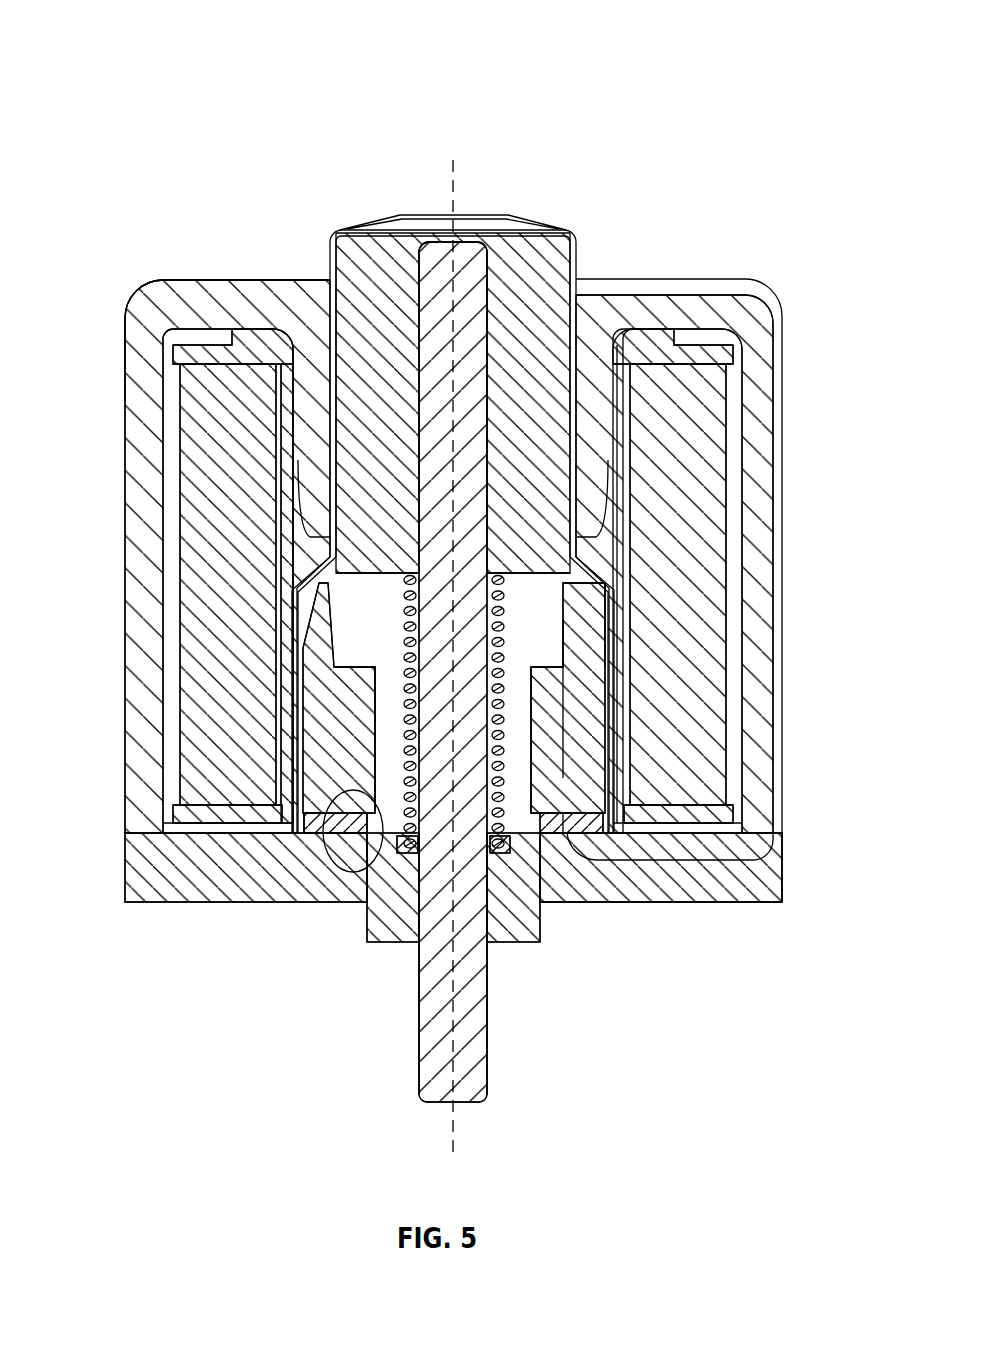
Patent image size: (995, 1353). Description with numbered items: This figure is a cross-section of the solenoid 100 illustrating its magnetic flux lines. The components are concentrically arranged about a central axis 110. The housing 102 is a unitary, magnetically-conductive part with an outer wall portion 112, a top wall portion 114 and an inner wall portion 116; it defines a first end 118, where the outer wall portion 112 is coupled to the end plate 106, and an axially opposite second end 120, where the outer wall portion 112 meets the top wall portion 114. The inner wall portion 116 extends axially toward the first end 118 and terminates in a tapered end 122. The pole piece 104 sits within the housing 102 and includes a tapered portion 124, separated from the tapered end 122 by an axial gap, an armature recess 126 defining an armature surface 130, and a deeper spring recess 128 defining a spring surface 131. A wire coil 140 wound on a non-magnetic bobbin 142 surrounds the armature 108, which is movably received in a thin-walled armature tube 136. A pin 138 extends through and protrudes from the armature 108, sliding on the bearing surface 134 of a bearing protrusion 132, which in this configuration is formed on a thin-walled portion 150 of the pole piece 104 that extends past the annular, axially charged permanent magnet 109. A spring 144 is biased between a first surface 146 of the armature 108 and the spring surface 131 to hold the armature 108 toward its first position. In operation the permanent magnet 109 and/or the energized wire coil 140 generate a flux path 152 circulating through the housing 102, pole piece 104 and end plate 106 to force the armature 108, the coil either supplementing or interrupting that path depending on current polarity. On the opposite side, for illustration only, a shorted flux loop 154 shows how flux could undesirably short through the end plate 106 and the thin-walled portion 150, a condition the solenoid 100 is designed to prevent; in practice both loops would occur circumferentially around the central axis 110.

The solenoid 100 is at (147, 52).
The housing 102 is at (787, 492).
The pole piece 104 is at (590, 727).
The end plate 106 is at (723, 903).
The armature 108 is at (553, 250).
The permanent magnet 109 is at (367, 820).
The central axis 110 is at (453, 165).
The outer wall portion 112 is at (135, 560).
The top wall portion 114 is at (208, 305).
The inner wall portion 116 is at (300, 378).
The first end 118 is at (108, 862).
The second end 120 is at (137, 268).
The tapered end 122 is at (620, 525).
The tapered portion 124 is at (587, 625).
The armature recess 126 is at (557, 653).
The spring recess 128 is at (392, 683).
The armature surface 130 is at (363, 665).
The spring surface 131 is at (507, 835).
The bearing protrusion 132 is at (382, 927).
The bearing surface 134 is at (418, 910).
The armature tube 136 is at (481, 215).
The pin 138 is at (488, 1040).
The wire coil 140 is at (190, 475).
The bobbin 142 is at (200, 352).
The spring 144 is at (513, 578).
The first surface 146 is at (363, 577).
The thin-walled portion 150 is at (363, 830).
The flux path 152 is at (778, 742).
The shorted flux loop 154 is at (323, 837).